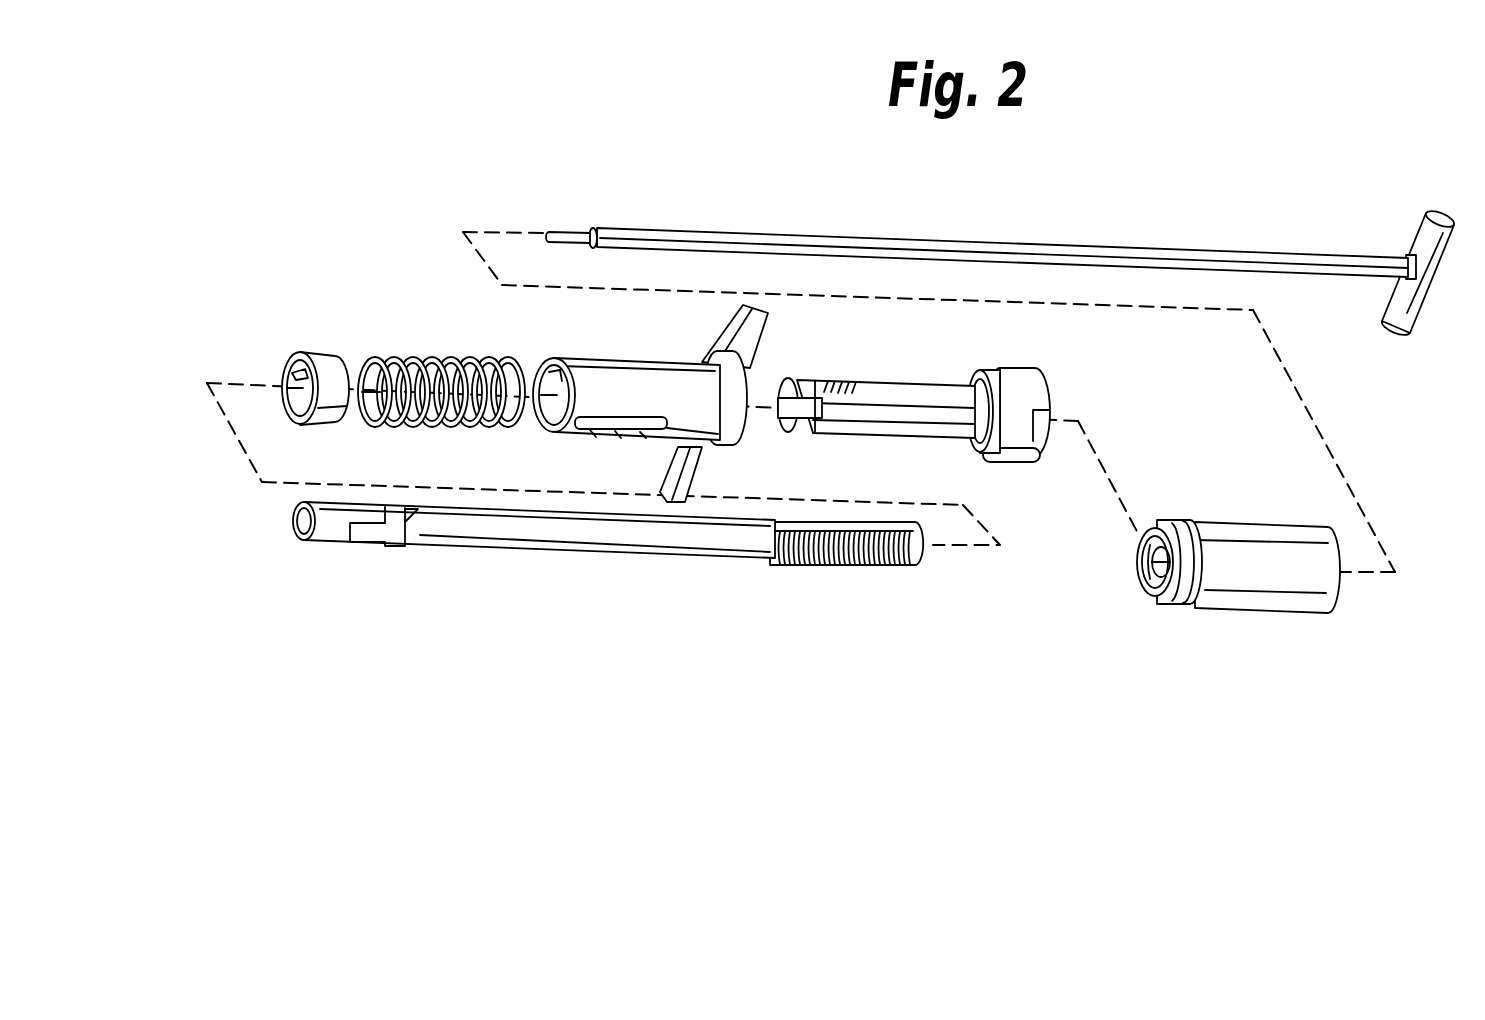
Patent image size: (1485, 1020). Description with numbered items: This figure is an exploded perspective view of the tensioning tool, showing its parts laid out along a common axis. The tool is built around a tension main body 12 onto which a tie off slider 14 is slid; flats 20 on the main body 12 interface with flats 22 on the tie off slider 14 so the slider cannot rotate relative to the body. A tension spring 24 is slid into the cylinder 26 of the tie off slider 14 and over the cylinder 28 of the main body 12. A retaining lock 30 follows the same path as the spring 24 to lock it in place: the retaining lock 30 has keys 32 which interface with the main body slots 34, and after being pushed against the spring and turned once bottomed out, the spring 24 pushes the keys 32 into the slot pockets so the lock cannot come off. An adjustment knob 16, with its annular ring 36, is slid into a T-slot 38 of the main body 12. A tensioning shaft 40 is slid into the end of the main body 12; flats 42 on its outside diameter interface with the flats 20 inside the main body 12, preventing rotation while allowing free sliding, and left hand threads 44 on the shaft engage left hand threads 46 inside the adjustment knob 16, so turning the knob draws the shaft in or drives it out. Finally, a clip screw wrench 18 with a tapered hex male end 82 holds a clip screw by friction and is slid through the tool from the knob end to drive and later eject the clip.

The tension main body 12 is at (1019, 447).
The tie off slider 14 is at (637, 403).
The adjustment knob 16 is at (1230, 562).
The clip screw wrench 18 is at (868, 240).
The flats 20 is at (937, 426).
The flats 22 is at (1178, 525).
The tension spring 24 is at (407, 360).
The cylinder 26 is at (540, 424).
The cylinder 28 is at (885, 439).
The retaining lock 30 is at (325, 352).
The keys 32 is at (300, 372).
The main body slots 34 is at (812, 435).
The annular ring 36 is at (1171, 527).
The T-slot 38 is at (1031, 452).
The tensioning shaft 40 is at (608, 572).
The flats 42 is at (860, 566).
The left hand threads 44 is at (812, 566).
The left hand threads 46 is at (1142, 588).
The tapered hex male end 82 is at (565, 230).